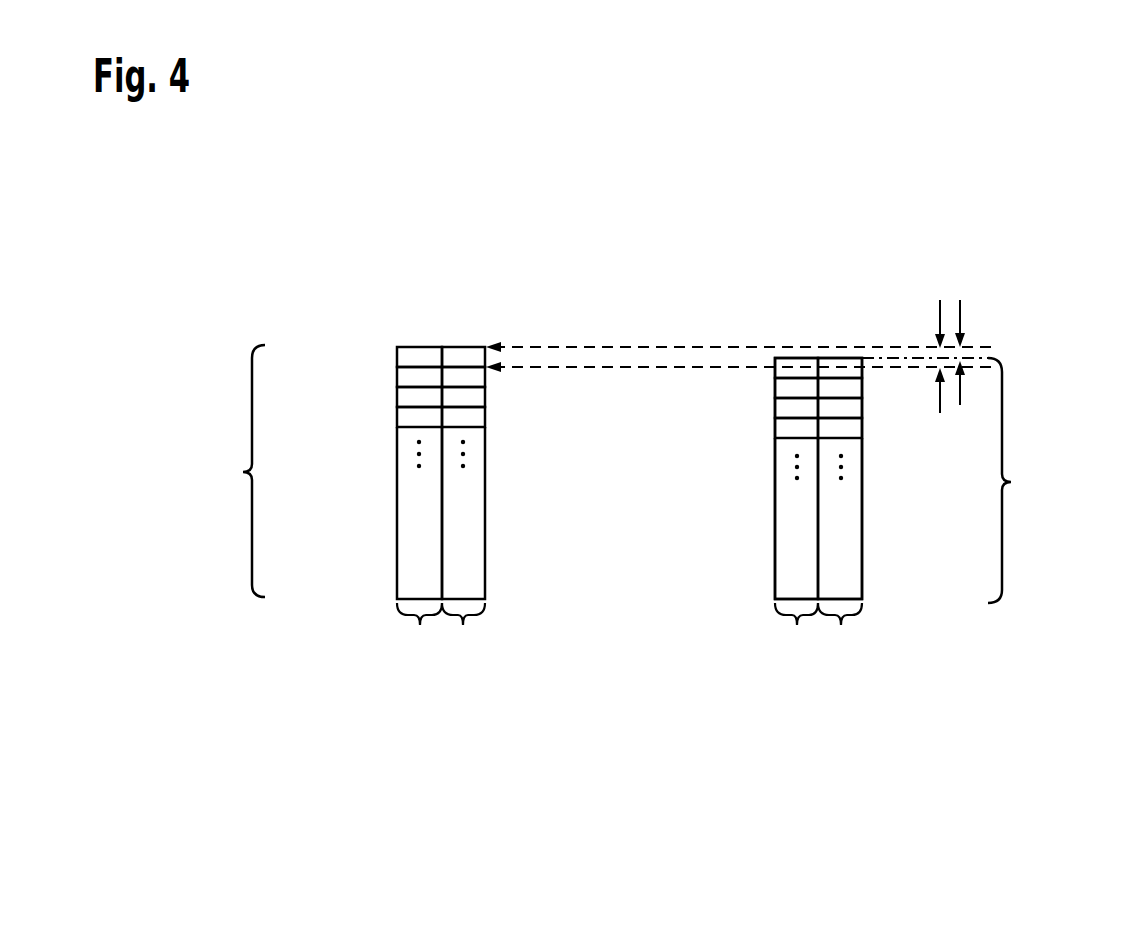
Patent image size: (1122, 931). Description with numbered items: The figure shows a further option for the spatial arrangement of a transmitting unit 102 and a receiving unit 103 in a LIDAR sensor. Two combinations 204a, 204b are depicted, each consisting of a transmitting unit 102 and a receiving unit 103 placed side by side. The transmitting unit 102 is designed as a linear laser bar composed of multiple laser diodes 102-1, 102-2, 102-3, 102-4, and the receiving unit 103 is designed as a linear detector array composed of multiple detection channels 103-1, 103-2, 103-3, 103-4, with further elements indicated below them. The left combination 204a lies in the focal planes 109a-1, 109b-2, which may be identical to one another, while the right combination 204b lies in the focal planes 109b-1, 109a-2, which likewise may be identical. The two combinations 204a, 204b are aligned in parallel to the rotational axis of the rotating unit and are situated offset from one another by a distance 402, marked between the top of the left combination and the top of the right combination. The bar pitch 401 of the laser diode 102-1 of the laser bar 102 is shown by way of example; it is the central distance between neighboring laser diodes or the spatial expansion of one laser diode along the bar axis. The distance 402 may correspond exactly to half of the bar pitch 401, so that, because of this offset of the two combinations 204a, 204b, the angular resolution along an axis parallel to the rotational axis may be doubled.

The transmitting unit 102 is at (605, 546).
The receiving unit 103 is at (656, 546).
The laser diode 102-1 is at (420, 355).
The laser diode 102-2 is at (424, 374).
The laser diode 102-3 is at (423, 400).
The laser diode 102-4 is at (424, 419).
The detection channel 103-1 is at (461, 358).
The detection channel 103-2 is at (468, 378).
The detection channel 103-3 is at (468, 398).
The detection channel 103-4 is at (470, 418).
The combination 204a is at (222, 471).
The combination 204b is at (1033, 480).
The bar pitch 401 is at (935, 313).
The distance 402 is at (964, 313).
The first focal plane 109a-1 is at (591, 483).
The second focal plane 109b-2 is at (628, 483).
The first focal plane 109b-1 is at (905, 561).
The second focal plane 109a-2 is at (893, 668).